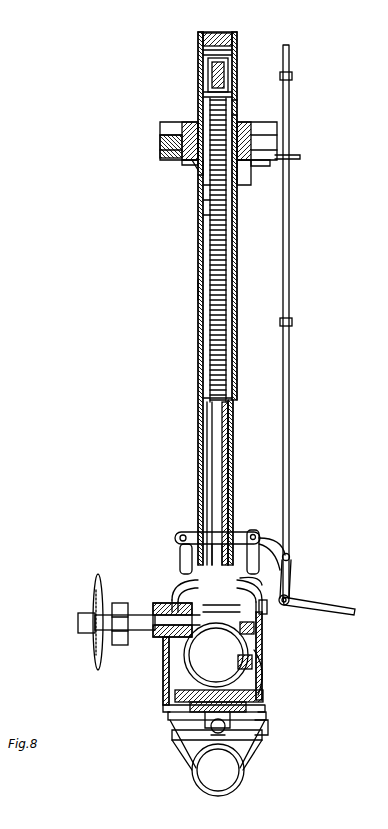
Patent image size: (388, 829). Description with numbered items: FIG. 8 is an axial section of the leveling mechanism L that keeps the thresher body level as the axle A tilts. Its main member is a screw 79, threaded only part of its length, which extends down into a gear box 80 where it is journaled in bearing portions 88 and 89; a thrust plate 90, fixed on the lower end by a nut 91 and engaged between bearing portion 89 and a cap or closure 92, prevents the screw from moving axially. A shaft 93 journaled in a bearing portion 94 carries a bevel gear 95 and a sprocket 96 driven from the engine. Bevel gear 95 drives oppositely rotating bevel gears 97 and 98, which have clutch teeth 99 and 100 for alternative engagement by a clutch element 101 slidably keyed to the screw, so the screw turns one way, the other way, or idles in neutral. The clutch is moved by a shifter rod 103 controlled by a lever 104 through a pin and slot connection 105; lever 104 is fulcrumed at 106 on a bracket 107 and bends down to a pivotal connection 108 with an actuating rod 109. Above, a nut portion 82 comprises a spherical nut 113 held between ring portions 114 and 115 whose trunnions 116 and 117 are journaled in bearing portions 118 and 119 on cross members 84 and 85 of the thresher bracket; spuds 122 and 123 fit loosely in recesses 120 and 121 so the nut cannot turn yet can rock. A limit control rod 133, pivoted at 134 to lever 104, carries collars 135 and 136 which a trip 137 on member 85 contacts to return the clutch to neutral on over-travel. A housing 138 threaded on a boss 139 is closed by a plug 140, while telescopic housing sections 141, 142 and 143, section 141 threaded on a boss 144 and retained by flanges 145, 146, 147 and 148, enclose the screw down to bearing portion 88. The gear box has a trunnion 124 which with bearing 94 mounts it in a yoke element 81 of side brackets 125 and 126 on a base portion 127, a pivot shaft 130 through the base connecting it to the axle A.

The screw 79 is at (203, 323).
The plug 140 is at (200, 34).
The housing 138 is at (203, 52).
The boss 139 is at (190, 118).
The nut portion 82 is at (195, 118).
The outwardly extending flange portion 148 is at (205, 378).
The inwardly extending collar or flange portion 145 is at (205, 385).
The telescopic housing section 142 is at (207, 412).
The upwardly extending flange portion 147 is at (208, 440).
The telescopic housing section 143 is at (207, 463).
The ring portion 114 is at (188, 120).
The cross member 84 is at (180, 128).
The trunnion 116 is at (165, 134).
The bearing portion 118 is at (182, 158).
The spud 122 is at (192, 165).
The recess 120 is at (200, 170).
The spherical nut 113 is at (203, 175).
The boss 144 is at (205, 188).
The telescopic housing section 141 is at (205, 200).
The upwardly extending flange portion 146 is at (205, 215).
The leveling mechanism L is at (196, 293).
The ring portion 115 is at (244, 128).
The trunnion 117 is at (268, 135).
The recess 121 is at (238, 120).
The spud 123 is at (241, 125).
The bearing portion 119 is at (263, 162).
The cross member 85 is at (248, 185).
The limit control rod 133 is at (290, 484).
The collar 135 is at (293, 76).
The plate or trip 137 is at (294, 156).
The collar 136 is at (293, 322).
The pin and slot connection 105 is at (187, 530).
The lever 104 is at (237, 532).
The shifter rod 103 is at (188, 570).
The fulcrum 106 is at (258, 514).
The pivot 134 is at (288, 552).
The bracket 107 is at (284, 572).
The bevel gear 97 is at (285, 585).
The pivotal connection 108 is at (262, 580).
The actuating rod 109 is at (330, 606).
The gear box 80 is at (173, 586).
The bearing portion 88 is at (190, 583).
The shaft 93 is at (145, 612).
The sprocket 96 is at (95, 605).
The bearing portion 94 is at (143, 637).
The bevel gear 95 is at (160, 648).
The clutch teeth 100 is at (165, 665).
The clutch teeth 99 is at (267, 612).
The trunnion 124 is at (266, 628).
The clutch element 101 is at (263, 644).
The bevel gear 98 is at (262, 660).
The yoke element 81 is at (270, 677).
The bearing portion 89 is at (250, 686).
The thrust plate 90 is at (242, 700).
The side bracket 126 is at (242, 712).
The base portion 127 is at (250, 725).
The side bracket 125 is at (165, 690).
The nut 91 is at (175, 712).
The cap or closure 92 is at (178, 728).
The pivot shaft 130 is at (232, 740).
The axle A is at (190, 780).